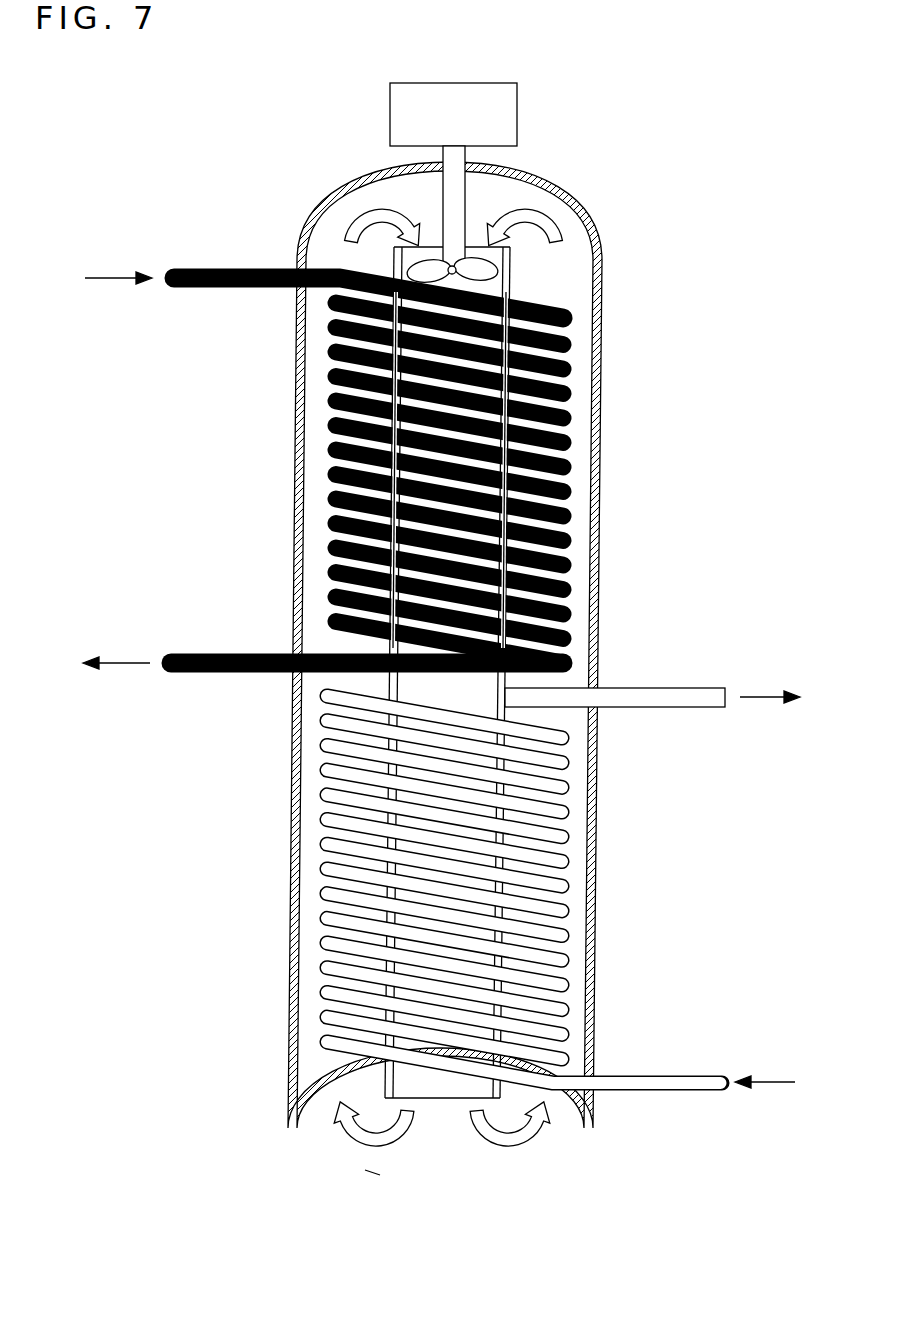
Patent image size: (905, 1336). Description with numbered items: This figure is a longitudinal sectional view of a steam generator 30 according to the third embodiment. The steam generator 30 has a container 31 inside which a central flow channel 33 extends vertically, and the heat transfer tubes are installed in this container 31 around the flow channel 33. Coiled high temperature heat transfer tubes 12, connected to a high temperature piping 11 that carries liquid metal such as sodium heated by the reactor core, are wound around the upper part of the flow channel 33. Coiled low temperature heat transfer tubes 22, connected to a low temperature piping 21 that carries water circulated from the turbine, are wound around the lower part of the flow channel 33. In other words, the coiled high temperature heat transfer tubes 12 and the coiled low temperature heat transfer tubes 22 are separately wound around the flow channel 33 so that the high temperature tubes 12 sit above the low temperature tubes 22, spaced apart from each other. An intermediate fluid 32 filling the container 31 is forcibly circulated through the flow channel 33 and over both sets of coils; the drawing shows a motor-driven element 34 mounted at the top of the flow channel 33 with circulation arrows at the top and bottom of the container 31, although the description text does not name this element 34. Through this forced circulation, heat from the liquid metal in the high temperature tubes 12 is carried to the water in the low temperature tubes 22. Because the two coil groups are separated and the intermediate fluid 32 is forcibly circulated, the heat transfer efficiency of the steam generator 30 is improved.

The high temperature piping 11 is at (232, 653).
The coiled high temperature heat transfer tubes 12 is at (328, 476).
The low temperature piping 21 is at (653, 1073).
The coiled low temperature heat transfer tubes 22 is at (556, 908).
The steam generator 30 is at (391, 675).
The container 31 is at (589, 1147).
The intermediate fluid 32 is at (373, 1173).
The flow channel 33 is at (447, 1090).
The agitating fan with motor 34 is at (457, 203).